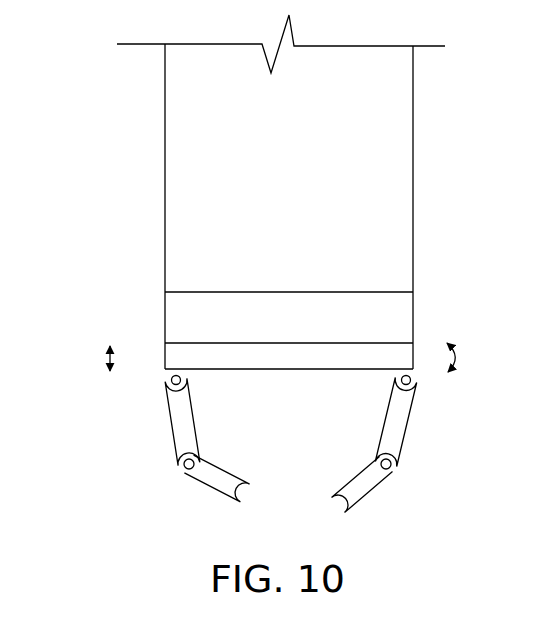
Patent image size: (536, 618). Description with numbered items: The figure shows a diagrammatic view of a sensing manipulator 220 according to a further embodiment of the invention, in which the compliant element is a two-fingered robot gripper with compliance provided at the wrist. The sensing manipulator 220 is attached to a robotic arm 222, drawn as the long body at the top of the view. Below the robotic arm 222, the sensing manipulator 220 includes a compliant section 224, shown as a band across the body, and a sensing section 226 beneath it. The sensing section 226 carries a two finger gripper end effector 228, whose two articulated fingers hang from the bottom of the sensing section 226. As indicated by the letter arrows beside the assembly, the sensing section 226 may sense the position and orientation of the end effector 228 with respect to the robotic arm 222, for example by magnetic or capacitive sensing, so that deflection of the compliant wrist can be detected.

The sensing manipulator 220 is at (59, 316).
The robotic arm 222 is at (400, 157).
The compliant section 224 is at (407, 315).
The sensing section 226 is at (305, 370).
The two finger gripper end effector 228 is at (182, 475).